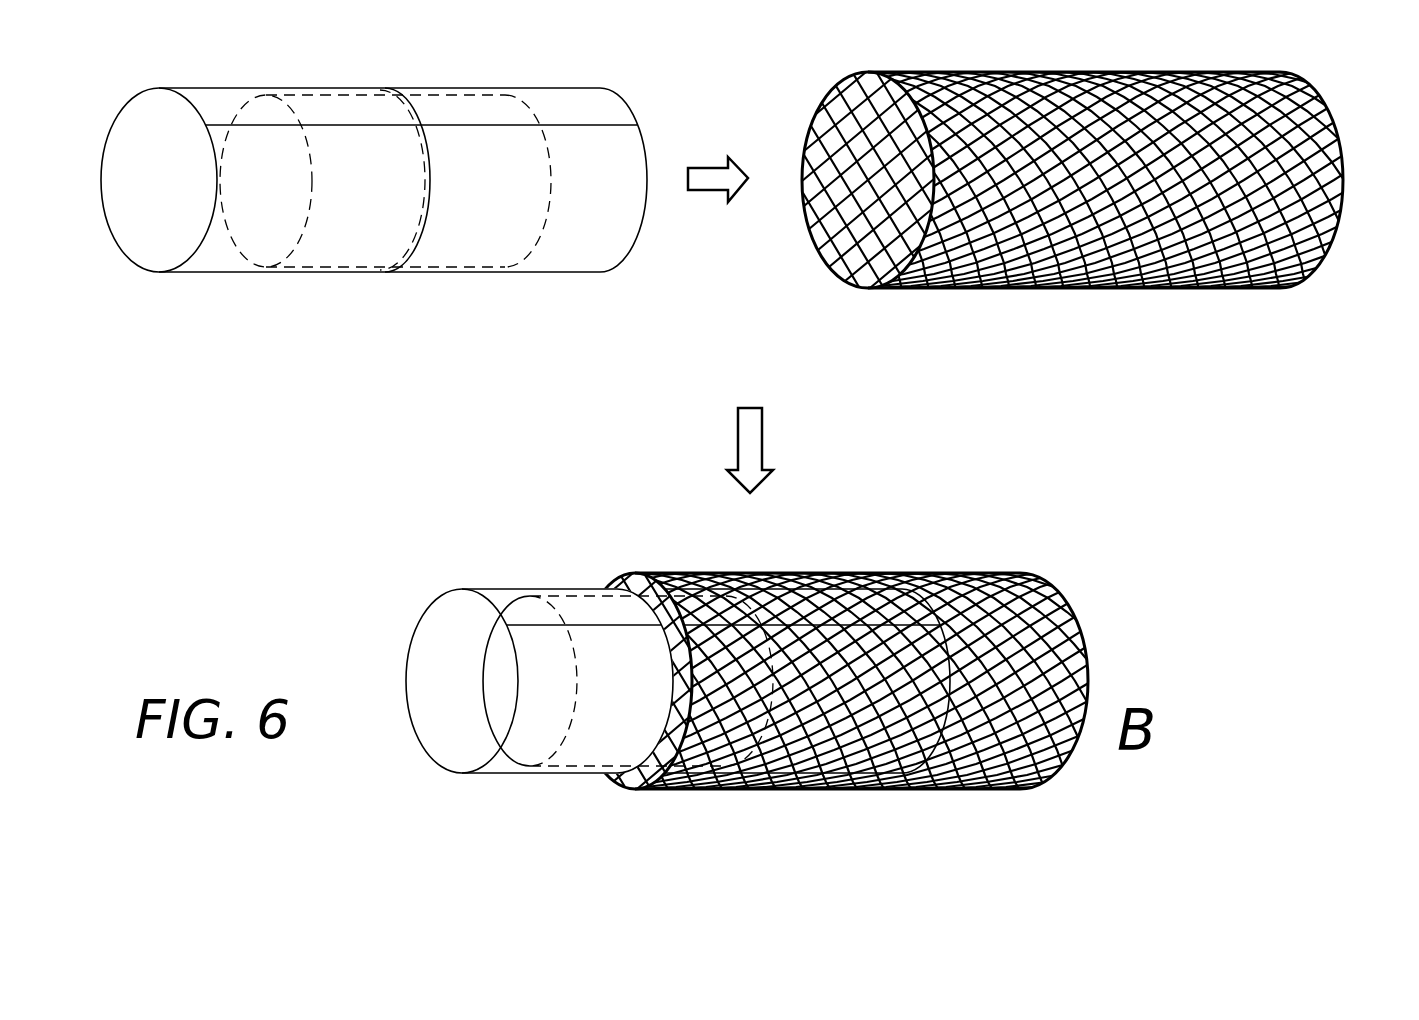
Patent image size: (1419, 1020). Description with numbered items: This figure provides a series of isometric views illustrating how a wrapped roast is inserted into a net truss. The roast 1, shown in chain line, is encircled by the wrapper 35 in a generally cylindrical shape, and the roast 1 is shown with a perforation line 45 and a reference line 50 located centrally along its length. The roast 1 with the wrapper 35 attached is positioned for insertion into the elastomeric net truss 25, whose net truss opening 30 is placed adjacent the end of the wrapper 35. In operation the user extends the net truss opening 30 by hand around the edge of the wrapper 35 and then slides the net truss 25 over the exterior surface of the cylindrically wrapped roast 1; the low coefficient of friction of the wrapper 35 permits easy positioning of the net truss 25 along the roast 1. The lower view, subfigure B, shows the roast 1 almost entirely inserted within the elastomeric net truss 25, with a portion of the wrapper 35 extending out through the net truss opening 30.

The roast 1 is at (453, 100).
The elastomeric net truss 25 is at (1315, 270).
The net truss opening 30 is at (895, 248).
The wrapper 35 is at (572, 247).
The perforation line 45 is at (428, 190).
The reference line 50 is at (418, 242).